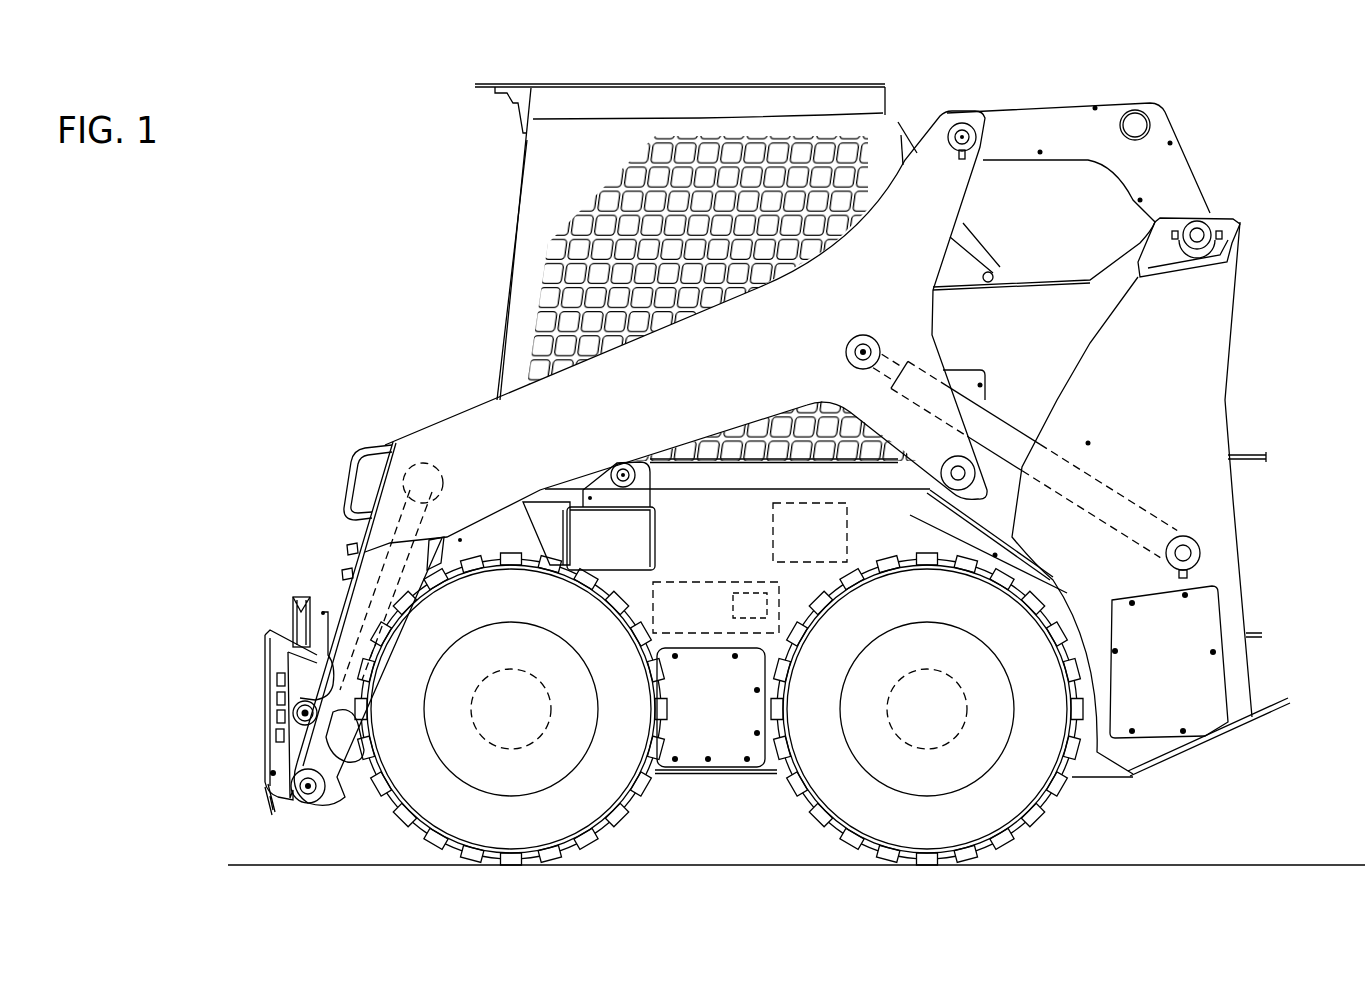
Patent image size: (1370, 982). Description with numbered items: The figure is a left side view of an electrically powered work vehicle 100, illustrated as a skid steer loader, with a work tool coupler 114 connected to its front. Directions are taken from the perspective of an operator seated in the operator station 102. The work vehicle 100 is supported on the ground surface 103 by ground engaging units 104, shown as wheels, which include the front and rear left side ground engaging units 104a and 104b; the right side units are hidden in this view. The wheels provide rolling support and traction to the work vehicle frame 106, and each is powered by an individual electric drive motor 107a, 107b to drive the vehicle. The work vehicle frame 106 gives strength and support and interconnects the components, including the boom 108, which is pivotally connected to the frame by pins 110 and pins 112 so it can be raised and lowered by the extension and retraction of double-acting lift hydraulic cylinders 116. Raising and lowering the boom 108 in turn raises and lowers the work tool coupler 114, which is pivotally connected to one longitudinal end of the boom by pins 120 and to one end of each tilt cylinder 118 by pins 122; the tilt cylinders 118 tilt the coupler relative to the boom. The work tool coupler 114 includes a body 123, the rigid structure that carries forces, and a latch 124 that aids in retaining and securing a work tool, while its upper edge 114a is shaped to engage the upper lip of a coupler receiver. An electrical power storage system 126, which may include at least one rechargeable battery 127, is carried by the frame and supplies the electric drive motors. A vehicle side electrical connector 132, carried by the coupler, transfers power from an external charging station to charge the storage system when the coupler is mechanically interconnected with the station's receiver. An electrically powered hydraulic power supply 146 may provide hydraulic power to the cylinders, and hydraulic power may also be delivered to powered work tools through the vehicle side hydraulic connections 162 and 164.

The work vehicle 100 is at (1252, 52).
The operator station 102 is at (488, 210).
The ground surface 103 is at (1233, 863).
The ground engaging units 104 is at (721, 736).
The front left side ground engaging unit 104a is at (511, 736).
The rear left side ground engaging unit 104b is at (929, 736).
The work vehicle frame 106 is at (1252, 392).
The electric drive motor 107a is at (511, 751).
The electric drive motor 107b is at (927, 751).
The boom 108 is at (1121, 200).
The pins 110 is at (1206, 226).
The pins 112 is at (640, 478).
The work tool coupler 114 is at (227, 703).
The upper edge 114a is at (267, 630).
The lift hydraulic cylinders 116 is at (1010, 410).
The tilt cylinders 118 is at (385, 533).
The pins 120 is at (312, 800).
The pins 122 is at (293, 711).
The body 123 is at (250, 757).
The latch 124 is at (256, 816).
The electrical power storage system 126 is at (712, 620).
The rechargeable battery 127 is at (745, 590).
The vehicle side electrical connector 132 is at (278, 735).
The electrically powered hydraulic power supply 146 is at (833, 542).
The vehicle side hydraulic connection 162 is at (340, 573).
The vehicle side hydraulic connection 164 is at (348, 548).